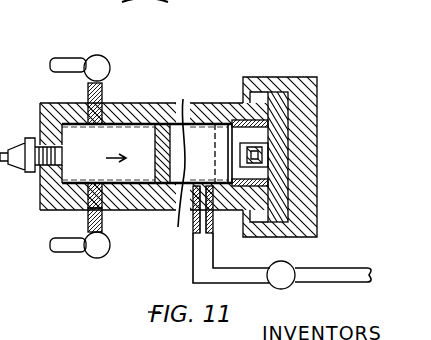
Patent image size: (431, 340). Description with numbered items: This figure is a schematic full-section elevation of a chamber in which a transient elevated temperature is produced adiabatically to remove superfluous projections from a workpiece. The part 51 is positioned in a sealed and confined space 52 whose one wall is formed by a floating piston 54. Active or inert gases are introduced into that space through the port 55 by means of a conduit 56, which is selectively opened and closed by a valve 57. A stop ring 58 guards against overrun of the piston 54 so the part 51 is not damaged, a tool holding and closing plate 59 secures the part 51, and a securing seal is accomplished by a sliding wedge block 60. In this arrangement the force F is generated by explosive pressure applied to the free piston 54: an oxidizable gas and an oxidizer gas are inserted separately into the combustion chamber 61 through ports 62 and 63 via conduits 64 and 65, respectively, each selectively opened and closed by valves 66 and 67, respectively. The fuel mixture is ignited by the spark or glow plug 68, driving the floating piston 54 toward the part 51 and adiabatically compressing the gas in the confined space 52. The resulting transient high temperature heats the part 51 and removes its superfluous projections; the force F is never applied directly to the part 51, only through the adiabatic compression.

The part 51 is at (258, 176).
The sealed and confined space 52 is at (221, 124).
The floating piston 54 is at (168, 130).
The port 55 is at (193, 206).
The conduit 56 is at (194, 262).
The valve 57 is at (292, 265).
The stop ring 58 is at (266, 138).
The tool holding and closing plate 59 is at (278, 95).
The sliding wedge block 60 is at (318, 212).
The combustion chamber 61 is at (118, 136).
The port 62 is at (86, 110).
The port 63 is at (85, 208).
The conduit 64 is at (104, 90).
The conduit 65 is at (103, 220).
The valve 66 is at (97, 54).
The valve 67 is at (90, 259).
The spark or glow plug 68 is at (24, 172).